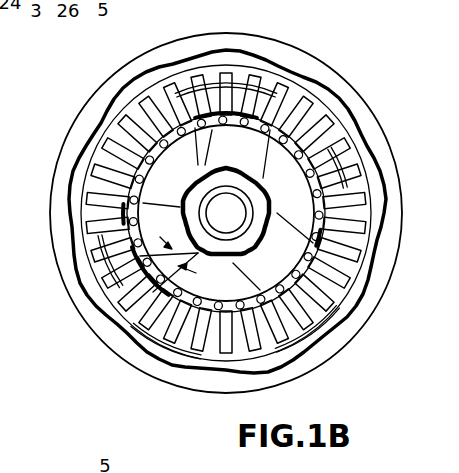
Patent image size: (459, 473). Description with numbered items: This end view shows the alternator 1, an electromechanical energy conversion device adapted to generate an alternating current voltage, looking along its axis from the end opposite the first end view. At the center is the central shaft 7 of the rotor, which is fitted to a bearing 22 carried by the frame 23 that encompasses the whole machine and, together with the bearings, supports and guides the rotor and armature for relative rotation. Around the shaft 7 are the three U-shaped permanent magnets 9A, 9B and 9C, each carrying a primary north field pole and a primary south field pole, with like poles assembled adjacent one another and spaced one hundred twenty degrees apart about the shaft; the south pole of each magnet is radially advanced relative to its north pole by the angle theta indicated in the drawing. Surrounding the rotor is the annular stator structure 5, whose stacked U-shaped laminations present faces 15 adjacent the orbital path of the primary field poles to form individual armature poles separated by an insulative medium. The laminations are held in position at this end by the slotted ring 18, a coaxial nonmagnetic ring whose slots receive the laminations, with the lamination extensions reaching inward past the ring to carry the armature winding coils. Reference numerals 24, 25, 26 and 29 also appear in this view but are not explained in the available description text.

The alternator 1 is at (358, 44).
The annular stator structure 5 is at (74, 136).
The central shaft 7 is at (221, 224).
The U-shaped permanent magnet 9A is at (249, 157).
The U-shaped permanent magnet 9B is at (175, 223).
The U-shaped permanent magnet 9C is at (289, 258).
The face 15 is at (272, 332).
The slotted ring 18 is at (166, 362).
The bearing 22 is at (248, 200).
The frame 23 is at (366, 108).
The stator yoke 24 is at (260, 74).
The winding connection 25 is at (350, 166).
The stator slot 26 is at (200, 62).
The stator core 29 is at (251, 57).